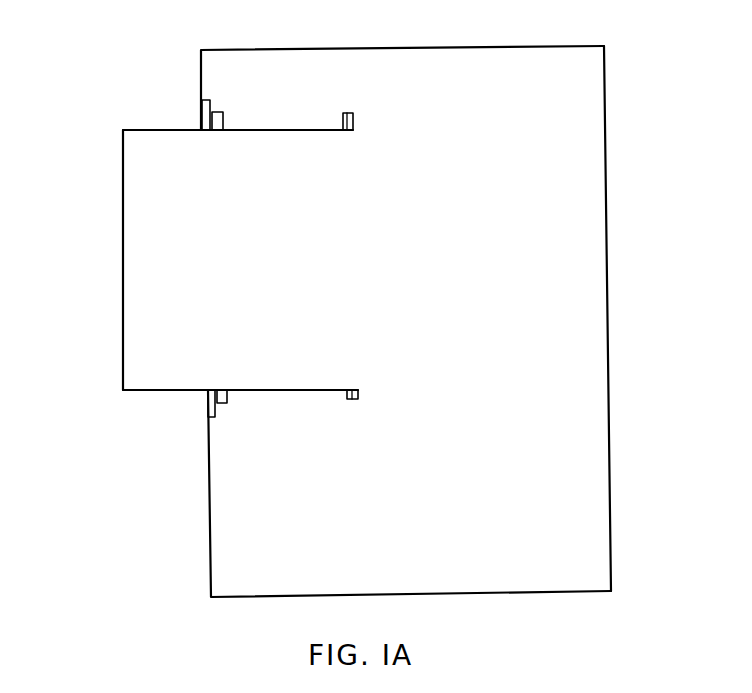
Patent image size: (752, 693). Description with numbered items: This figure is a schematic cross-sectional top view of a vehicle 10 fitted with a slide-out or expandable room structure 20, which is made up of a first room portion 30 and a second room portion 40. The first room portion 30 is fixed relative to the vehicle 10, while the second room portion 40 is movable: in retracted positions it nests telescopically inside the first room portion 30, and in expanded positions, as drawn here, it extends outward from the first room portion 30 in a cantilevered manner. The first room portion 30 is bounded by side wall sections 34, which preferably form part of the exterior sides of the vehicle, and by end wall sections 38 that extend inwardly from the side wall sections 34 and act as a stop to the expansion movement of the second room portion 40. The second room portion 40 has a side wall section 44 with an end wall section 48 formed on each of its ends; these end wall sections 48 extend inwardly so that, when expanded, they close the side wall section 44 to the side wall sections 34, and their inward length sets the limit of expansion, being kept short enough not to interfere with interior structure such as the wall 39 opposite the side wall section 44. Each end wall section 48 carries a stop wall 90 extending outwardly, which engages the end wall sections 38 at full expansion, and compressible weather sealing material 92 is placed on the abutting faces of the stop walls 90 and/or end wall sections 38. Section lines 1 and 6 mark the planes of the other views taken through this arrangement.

The vehicle 10 is at (608, 455).
The expandable room structure 20 is at (410, 193).
The first room portion 30 is at (504, 248).
The side wall sections 34 is at (200, 92).
The end wall sections 38 is at (212, 114).
The wall 39 is at (605, 312).
The second room portion 40 is at (243, 253).
The side wall section 44 is at (122, 183).
The end wall sections 48 is at (268, 130).
The stop wall 90 is at (355, 115).
The weather sealing material 92 is at (224, 122).
The section line 1- 1 is at (702, 302).
The section line 6- 6 is at (197, 398).